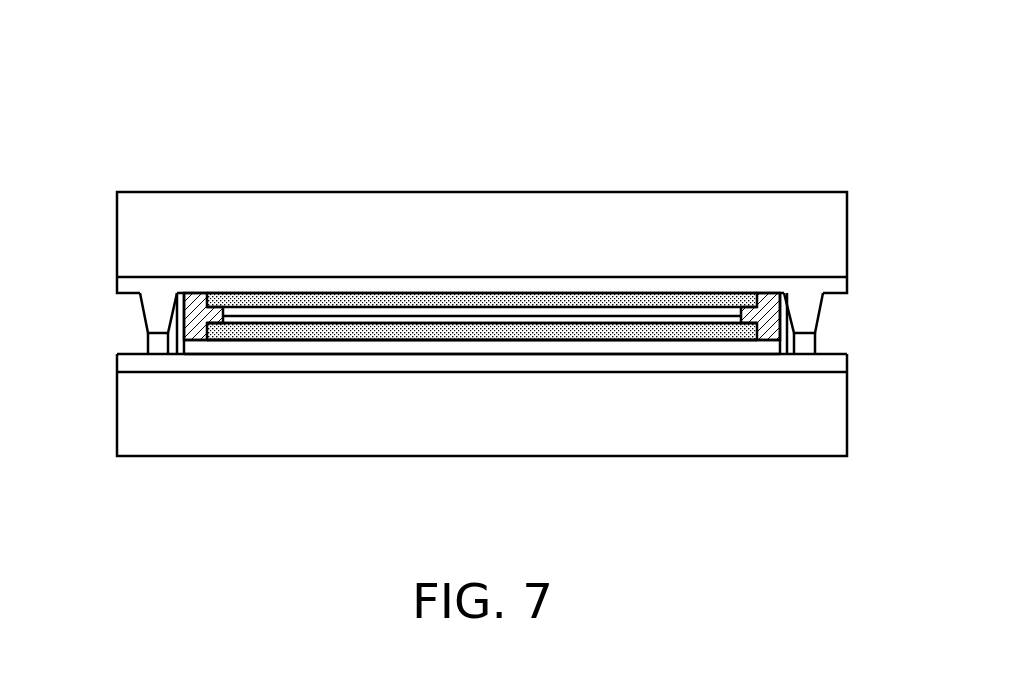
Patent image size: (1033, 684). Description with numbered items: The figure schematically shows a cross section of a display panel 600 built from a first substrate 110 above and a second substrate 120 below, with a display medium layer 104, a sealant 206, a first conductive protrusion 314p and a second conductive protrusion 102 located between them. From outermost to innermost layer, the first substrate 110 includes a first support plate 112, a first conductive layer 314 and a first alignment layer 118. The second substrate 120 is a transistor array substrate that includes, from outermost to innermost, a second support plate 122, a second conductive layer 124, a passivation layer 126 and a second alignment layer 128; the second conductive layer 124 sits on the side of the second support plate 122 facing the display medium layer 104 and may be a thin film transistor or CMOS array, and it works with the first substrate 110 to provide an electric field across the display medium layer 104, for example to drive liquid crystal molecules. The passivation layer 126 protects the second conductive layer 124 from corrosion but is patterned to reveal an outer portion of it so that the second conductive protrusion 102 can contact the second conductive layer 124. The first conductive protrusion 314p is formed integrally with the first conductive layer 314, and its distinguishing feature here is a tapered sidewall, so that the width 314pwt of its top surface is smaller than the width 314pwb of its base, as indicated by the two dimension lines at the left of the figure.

The first substrate 110 is at (743, 7).
The second substrate 120 is at (891, 8).
The first support plate 112 is at (832, 217).
The first conductive layer 314 is at (827, 287).
The first conductive protrusion 314p is at (158, 315).
The first alignment layer 118 is at (396, 300).
The second conductive protrusion 102 is at (158, 345).
The sealant 206 is at (762, 317).
The display medium layer 104 is at (467, 317).
The second alignment layer 128 is at (538, 333).
The passivation layer 126 is at (765, 348).
The second conductive layer 124 is at (832, 362).
The second support plate 122 is at (832, 415).
The width of a base of the first conductive protrusion 314pwb is at (175, 293).
The width of a top surface of the first conductive protrusion 314pwt is at (148, 354).
The display panel 600 is at (890, 544).